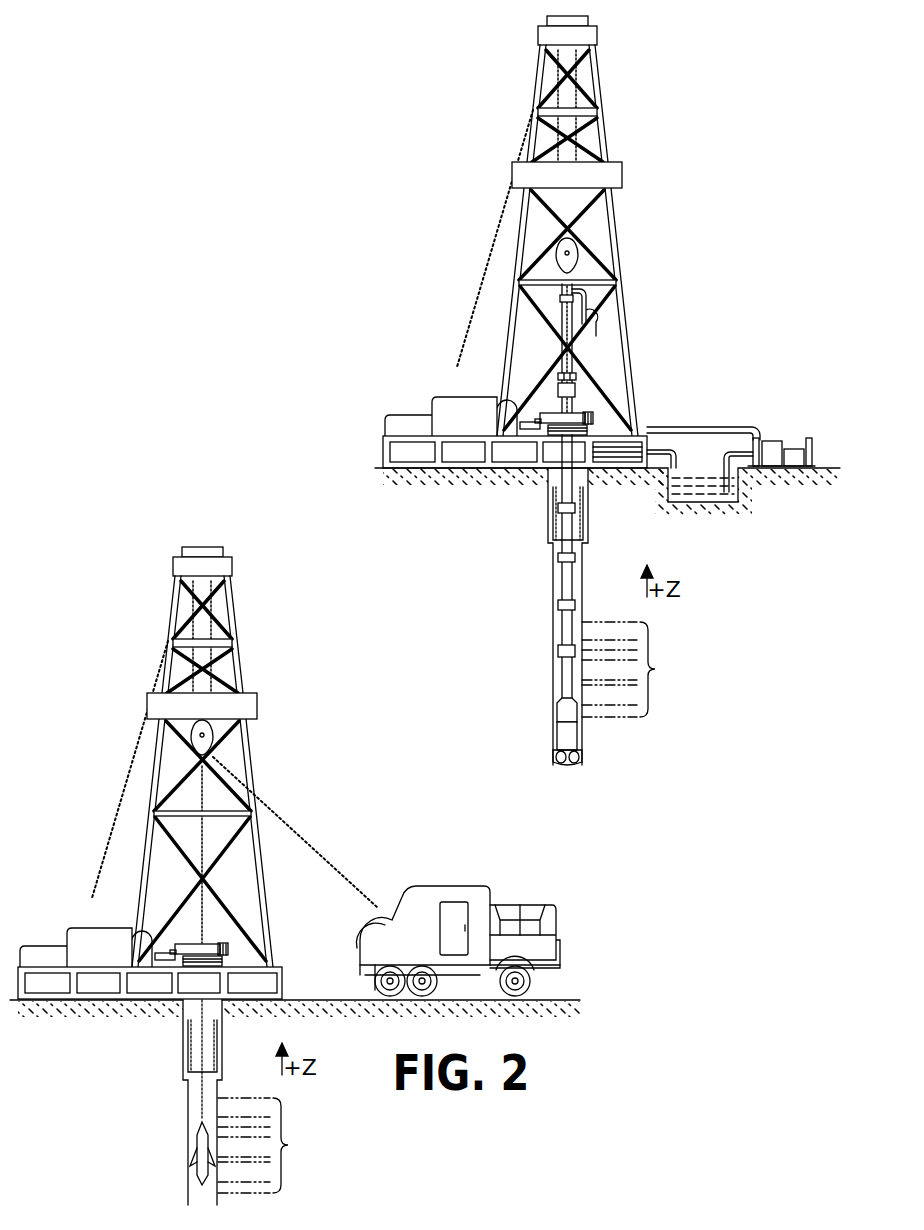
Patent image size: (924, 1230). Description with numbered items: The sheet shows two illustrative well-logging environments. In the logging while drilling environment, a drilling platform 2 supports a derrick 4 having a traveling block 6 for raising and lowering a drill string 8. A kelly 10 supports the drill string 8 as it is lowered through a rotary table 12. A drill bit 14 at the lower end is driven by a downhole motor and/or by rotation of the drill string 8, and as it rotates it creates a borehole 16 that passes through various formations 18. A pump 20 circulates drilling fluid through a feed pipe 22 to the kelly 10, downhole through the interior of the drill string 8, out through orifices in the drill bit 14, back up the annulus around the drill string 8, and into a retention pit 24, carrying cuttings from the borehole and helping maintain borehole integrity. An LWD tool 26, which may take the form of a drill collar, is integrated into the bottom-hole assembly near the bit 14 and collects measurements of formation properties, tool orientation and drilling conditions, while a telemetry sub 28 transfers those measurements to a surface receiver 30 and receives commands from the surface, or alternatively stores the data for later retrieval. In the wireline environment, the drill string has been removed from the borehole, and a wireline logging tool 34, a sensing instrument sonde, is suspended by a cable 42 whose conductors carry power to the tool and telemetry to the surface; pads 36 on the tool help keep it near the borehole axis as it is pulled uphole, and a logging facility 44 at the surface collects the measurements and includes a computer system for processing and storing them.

In FIG. 1, the drilling platform 2 is at (383, 445).
In FIG. 2, the drilling platform 2 is at (165, 970).
In FIG. 1, the derrick 4 is at (603, 142).
In FIG. 2, the derrick 4 is at (200, 757).
In FIG. 1, the traveling block 6 is at (578, 254).
In FIG. 2, the traveling block 6 is at (243, 741).
In FIG. 1, the drill string 8 is at (572, 589).
In FIG. 1, the kelly 10 is at (567, 316).
In FIG. 1, the rotary table 12 is at (581, 412).
In FIG. 2, the rotary table 12 is at (235, 921).
In FIG. 1, the drill bit 14 is at (582, 760).
In FIG. 1, the borehole 16 is at (580, 593).
In FIG. 1, the formations 18 is at (633, 669).
In FIG. 2, the formations 18 is at (268, 1145).
In FIG. 1, the pump 20 is at (768, 440).
In FIG. 1, the feed pipe 22 is at (713, 428).
In FIG. 1, the retention pit 24 is at (682, 497).
In FIG. 1, the LWD tool 26 is at (561, 727).
In FIG. 1, the telemetry sub 28 is at (561, 709).
In FIG. 1, the surface receiver 30 is at (573, 378).
In FIG. 2, the wireline logging tool 34 is at (198, 1148).
In FIG. 2, the pads 36 is at (191, 1163).
In FIG. 2, the cable 42 is at (273, 812).
In FIG. 2, the logging facility 44 is at (418, 890).